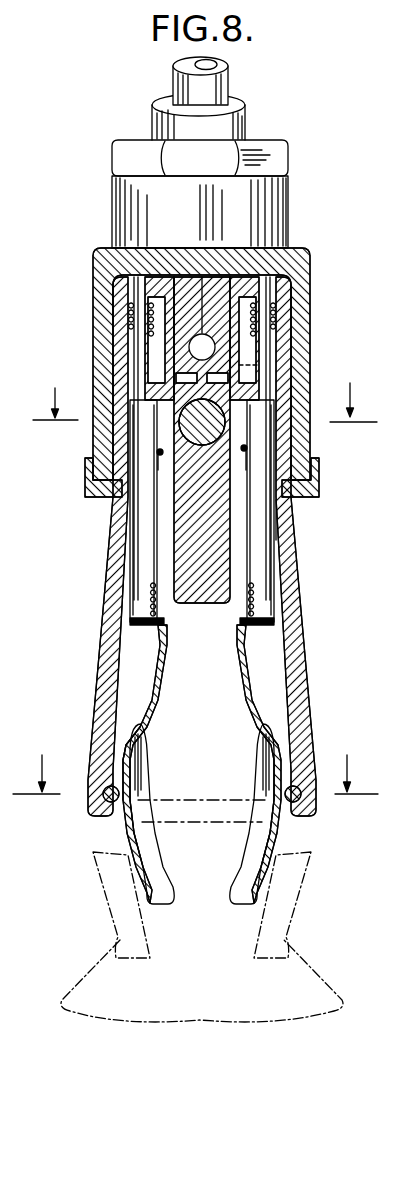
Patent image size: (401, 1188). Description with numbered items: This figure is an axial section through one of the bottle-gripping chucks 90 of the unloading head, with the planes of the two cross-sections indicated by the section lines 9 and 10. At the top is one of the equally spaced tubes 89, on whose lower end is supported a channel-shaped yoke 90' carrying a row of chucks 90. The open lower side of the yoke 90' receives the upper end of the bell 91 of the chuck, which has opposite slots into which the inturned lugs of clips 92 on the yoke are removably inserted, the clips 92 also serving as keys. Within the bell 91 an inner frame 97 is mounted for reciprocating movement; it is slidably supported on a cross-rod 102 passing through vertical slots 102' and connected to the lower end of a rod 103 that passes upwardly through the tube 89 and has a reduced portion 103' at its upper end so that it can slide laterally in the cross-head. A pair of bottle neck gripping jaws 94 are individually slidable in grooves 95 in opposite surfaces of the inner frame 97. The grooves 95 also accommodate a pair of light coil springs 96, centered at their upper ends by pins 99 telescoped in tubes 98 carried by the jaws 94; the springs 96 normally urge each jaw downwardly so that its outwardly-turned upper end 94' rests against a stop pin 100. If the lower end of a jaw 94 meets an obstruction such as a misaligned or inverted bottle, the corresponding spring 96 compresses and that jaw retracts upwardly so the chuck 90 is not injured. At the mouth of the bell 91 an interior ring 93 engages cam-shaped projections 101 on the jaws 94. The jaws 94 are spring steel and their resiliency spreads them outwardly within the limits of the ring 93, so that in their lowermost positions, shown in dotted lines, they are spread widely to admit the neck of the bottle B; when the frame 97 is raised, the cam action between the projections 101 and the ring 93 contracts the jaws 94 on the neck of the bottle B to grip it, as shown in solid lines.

The tube 89 is at (247, 119).
The rod 103 is at (229, 81).
The bottle-gripping chuck 90 is at (63, 611).
The channel-shaped yoke 90' is at (224, 364).
The bell 91 is at (108, 663).
The clip 92 is at (85, 489).
The interior ring 93 is at (301, 806).
The bottle neck gripping jaw 94 is at (202, 814).
The outwardly-turned upper end of jaw 94' is at (148, 449).
The groove 95 is at (158, 342).
The light coil spring 96 is at (303, 307).
The inner frame 97 is at (187, 542).
The tube 98 is at (276, 568).
The pin 99 is at (303, 343).
The stop pin 100 is at (246, 448).
The cam-shaped projection 101 is at (122, 752).
The cross-rod 102 is at (269, 427).
The vertical slot 102' is at (315, 520).
The reduced portion 103' is at (272, 368).
The section line 10- 10 is at (205, 402).
The section line 9- 9 is at (195, 775).
The bottle B is at (236, 925).